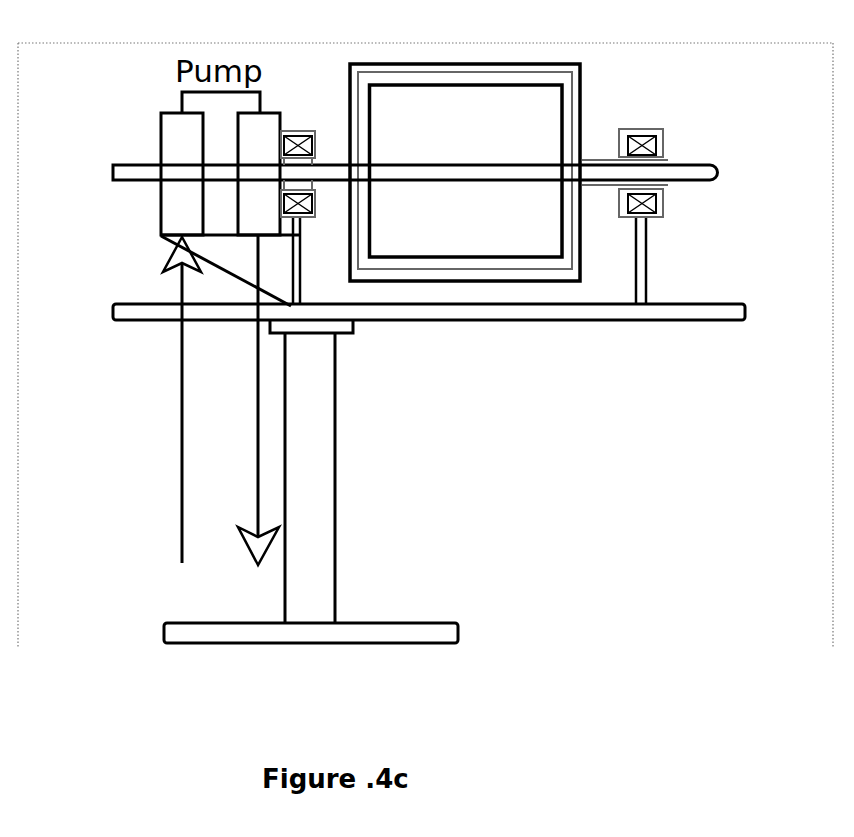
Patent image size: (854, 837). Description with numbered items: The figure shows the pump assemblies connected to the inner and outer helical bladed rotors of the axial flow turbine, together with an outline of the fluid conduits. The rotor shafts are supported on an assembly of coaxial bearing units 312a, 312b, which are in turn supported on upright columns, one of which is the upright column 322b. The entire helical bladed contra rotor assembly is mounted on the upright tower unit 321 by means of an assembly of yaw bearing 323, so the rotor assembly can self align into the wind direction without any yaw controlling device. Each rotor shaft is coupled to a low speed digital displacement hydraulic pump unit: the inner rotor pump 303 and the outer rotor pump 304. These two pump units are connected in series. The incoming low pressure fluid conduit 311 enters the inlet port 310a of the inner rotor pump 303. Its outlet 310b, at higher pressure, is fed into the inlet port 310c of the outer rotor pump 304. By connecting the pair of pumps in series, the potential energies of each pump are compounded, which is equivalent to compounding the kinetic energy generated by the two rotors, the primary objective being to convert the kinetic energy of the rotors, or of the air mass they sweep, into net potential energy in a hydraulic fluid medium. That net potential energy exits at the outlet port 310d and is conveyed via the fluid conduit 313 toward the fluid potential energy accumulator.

The inner rotor pump 303 is at (173, 128).
The outer rotor pump 304 is at (237, 137).
The inlet port 310a is at (163, 238).
The outlet 310b is at (182, 108).
The inlet port 310c is at (262, 103).
The outlet port 310d is at (265, 238).
The low pressure fluid conduit 311 is at (177, 463).
The coaxial bearing unit 312a is at (313, 131).
The coaxial bearing unit 312b is at (660, 137).
The fluid conduit 313 is at (260, 477).
The upright tower unit 321 is at (338, 413).
The upright column 322b is at (294, 270).
The yaw bearing 323 is at (305, 268).